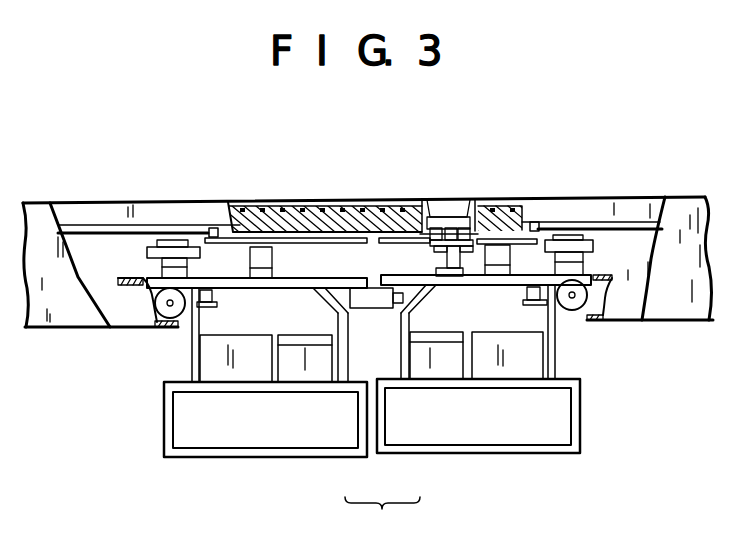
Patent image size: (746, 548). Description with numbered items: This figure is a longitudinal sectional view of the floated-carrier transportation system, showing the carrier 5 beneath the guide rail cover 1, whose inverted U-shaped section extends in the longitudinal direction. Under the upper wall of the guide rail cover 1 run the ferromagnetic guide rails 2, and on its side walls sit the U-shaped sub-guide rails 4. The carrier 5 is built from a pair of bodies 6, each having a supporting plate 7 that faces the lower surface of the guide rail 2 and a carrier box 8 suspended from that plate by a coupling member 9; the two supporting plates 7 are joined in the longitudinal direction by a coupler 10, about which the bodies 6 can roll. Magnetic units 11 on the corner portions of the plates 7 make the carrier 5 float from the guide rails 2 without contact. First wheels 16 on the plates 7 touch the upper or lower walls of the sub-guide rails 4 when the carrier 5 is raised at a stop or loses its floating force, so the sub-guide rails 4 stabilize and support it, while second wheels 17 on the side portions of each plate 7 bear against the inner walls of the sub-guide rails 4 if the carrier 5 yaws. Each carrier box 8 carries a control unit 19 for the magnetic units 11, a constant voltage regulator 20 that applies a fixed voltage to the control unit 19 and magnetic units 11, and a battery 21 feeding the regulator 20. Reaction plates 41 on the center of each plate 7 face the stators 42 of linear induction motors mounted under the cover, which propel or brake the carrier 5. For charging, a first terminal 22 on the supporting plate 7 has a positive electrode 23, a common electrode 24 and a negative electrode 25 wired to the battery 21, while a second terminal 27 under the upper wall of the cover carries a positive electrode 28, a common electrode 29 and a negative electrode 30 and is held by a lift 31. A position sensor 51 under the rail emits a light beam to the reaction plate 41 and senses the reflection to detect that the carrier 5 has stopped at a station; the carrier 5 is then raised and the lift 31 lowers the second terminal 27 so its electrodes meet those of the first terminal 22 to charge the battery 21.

The guide rail cover 1 is at (692, 200).
The guide rails 2 is at (145, 225).
The sub-guide rails 4 is at (120, 328).
The carrier 5 is at (382, 516).
The bodies 6 is at (343, 457).
The supporting plate 7 is at (300, 280).
The carrier box 8 is at (260, 457).
The coupling member 9 is at (190, 357).
The coupler 10 is at (384, 308).
The magnetic units 11 is at (185, 265).
The first wheels 16 is at (163, 297).
The second wheels 17 is at (217, 304).
The control unit 19 is at (235, 375).
The constant voltage regulator 20 is at (428, 334).
The battery 21 is at (312, 377).
The first terminal 22 is at (457, 247).
The positive electrode 23 is at (430, 242).
The common electrode 24 is at (438, 249).
The negative electrode 25 is at (463, 253).
The second terminal 27 is at (443, 227).
The positive electrode 28 is at (433, 230).
The common electrode 29 is at (462, 227).
The negative electrode 30 is at (472, 229).
The lift 31 is at (450, 203).
The reaction plates 41 is at (242, 240).
The stators 42 is at (320, 205).
The position sensor 51 is at (212, 228).